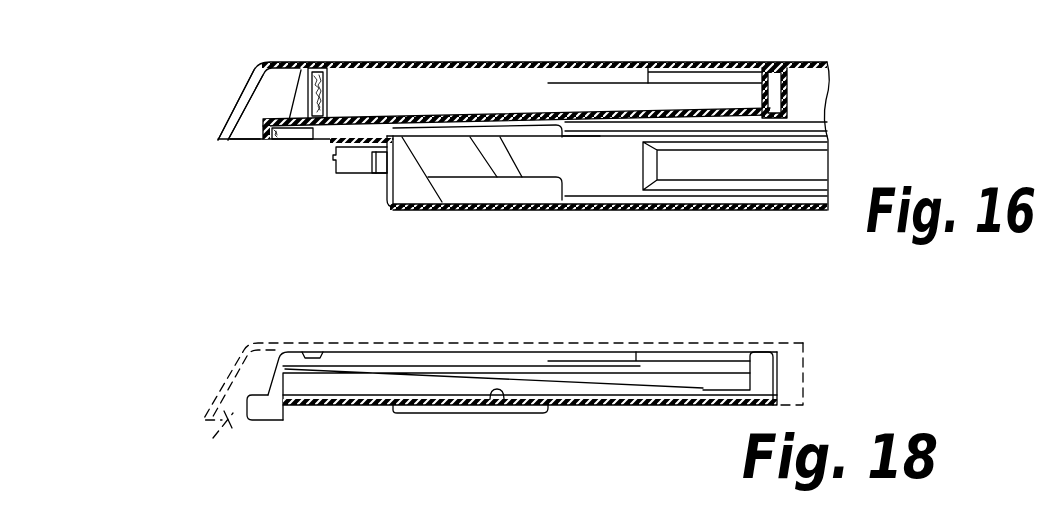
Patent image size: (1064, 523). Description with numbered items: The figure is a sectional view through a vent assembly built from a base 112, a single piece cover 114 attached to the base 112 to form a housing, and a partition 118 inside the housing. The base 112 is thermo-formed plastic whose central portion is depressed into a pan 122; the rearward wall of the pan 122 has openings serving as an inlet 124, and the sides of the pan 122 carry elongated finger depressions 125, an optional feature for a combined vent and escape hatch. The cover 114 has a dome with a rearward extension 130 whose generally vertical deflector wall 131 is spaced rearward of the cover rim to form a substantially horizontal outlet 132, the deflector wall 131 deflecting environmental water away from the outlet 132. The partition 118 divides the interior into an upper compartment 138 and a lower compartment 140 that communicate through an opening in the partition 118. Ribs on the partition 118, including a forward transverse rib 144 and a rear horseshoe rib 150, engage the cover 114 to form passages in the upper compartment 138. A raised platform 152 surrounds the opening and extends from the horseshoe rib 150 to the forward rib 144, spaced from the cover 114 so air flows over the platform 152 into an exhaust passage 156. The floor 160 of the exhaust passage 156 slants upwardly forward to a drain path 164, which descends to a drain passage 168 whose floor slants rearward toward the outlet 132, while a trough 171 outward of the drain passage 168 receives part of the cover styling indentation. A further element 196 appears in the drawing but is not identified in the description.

In FIG. 16, the base 112 is at (523, 207).
In FIG. 16, the cover 114 is at (640, 65).
In FIG. 16, the partition 118 is at (330, 142).
In FIG. 16, the pan 122 is at (642, 208).
In FIG. 16, the inlet 124 is at (373, 162).
In FIG. 16, the finger depressions 125 is at (773, 168).
In FIG. 16, the rearward extension 130 is at (230, 102).
In FIG. 18, the rearward extension 130 is at (227, 370).
In FIG. 16, the deflector wall 131 is at (230, 118).
In FIG. 16, the outlet 132 is at (243, 135).
In FIG. 18, the outlet 132 is at (212, 438).
In FIG. 16, the upper compartment 138 is at (463, 88).
In FIG. 16, the lower compartment 140 is at (603, 182).
In FIG. 16, the forward transverse rib 144 is at (780, 67).
In FIG. 16, the rear horseshoe rib 150 is at (378, 88).
In FIG. 16, the raised platform 152 is at (733, 95).
In FIG. 16, the exhaust passage 156 is at (648, 97).
In FIG. 16, the floor 160 is at (575, 113).
In FIG. 18, the drain path 164 is at (713, 390).
In FIG. 18, the drain passage 168 is at (587, 397).
In FIG. 18, the trough 171 is at (500, 395).
In FIG. 16, the bracket 196 is at (333, 162).